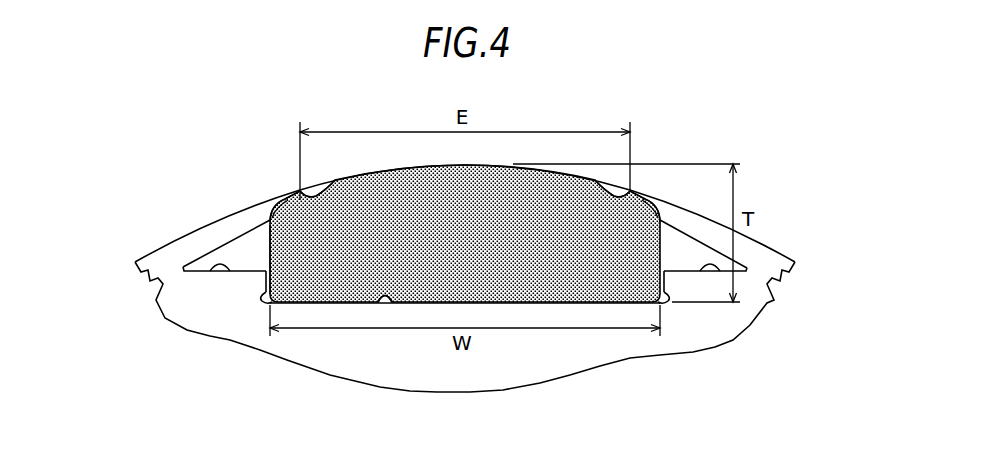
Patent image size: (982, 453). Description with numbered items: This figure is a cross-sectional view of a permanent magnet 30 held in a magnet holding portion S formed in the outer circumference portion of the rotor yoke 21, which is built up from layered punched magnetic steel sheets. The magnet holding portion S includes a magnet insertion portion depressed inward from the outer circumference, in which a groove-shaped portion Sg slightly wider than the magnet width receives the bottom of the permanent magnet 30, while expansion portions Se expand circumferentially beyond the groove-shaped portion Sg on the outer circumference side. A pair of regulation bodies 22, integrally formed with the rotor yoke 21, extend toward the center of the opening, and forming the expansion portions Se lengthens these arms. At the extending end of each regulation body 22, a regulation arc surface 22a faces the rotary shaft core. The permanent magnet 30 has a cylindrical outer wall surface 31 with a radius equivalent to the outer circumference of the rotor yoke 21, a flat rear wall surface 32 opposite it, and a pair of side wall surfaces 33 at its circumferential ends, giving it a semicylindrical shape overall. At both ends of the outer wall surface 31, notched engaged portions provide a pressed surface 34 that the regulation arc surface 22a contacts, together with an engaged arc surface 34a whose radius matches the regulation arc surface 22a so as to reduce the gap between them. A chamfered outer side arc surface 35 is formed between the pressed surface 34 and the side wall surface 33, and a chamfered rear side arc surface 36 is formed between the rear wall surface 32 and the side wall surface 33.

The rotor yoke 21 is at (572, 370).
The regulation body 22 is at (465, 220).
The regulation arc surface 22a is at (305, 199).
The permanent magnet 30 is at (451, 249).
The outer wall surface 31 is at (437, 165).
The rear wall surface 32 is at (517, 304).
The side wall surface 33 is at (266, 258).
The pressed surface 34 is at (281, 203).
The engaged arc surface 34a is at (283, 212).
The outer side arc surface 35 is at (279, 214).
The rear side arc surface 36 is at (268, 304).
The magnet holding portion S is at (264, 251).
The expansion portion Se is at (218, 263).
The groove-shaped portion Sg is at (383, 298).